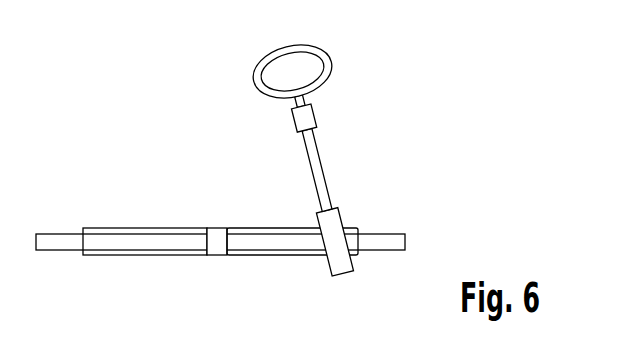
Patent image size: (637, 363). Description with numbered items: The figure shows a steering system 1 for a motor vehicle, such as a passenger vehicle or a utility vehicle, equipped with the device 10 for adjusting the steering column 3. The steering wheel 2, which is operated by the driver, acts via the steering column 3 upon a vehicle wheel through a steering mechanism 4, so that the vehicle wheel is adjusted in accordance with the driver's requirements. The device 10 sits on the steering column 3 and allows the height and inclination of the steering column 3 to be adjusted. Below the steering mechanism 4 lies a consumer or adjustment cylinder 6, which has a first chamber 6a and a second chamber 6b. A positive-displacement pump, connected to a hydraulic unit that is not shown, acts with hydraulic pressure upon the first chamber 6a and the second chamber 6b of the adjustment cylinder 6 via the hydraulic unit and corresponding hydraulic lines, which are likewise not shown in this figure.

The steering system 1 is at (220, 182).
The steering wheel 2 is at (253, 70).
The steering column 3 is at (323, 175).
The steering mechanism 4 is at (345, 258).
The adjustment cylinder 6 is at (219, 267).
The first chamber 6a is at (142, 245).
The second chamber 6b is at (300, 246).
The device for adjusting the steering column 10 is at (306, 118).